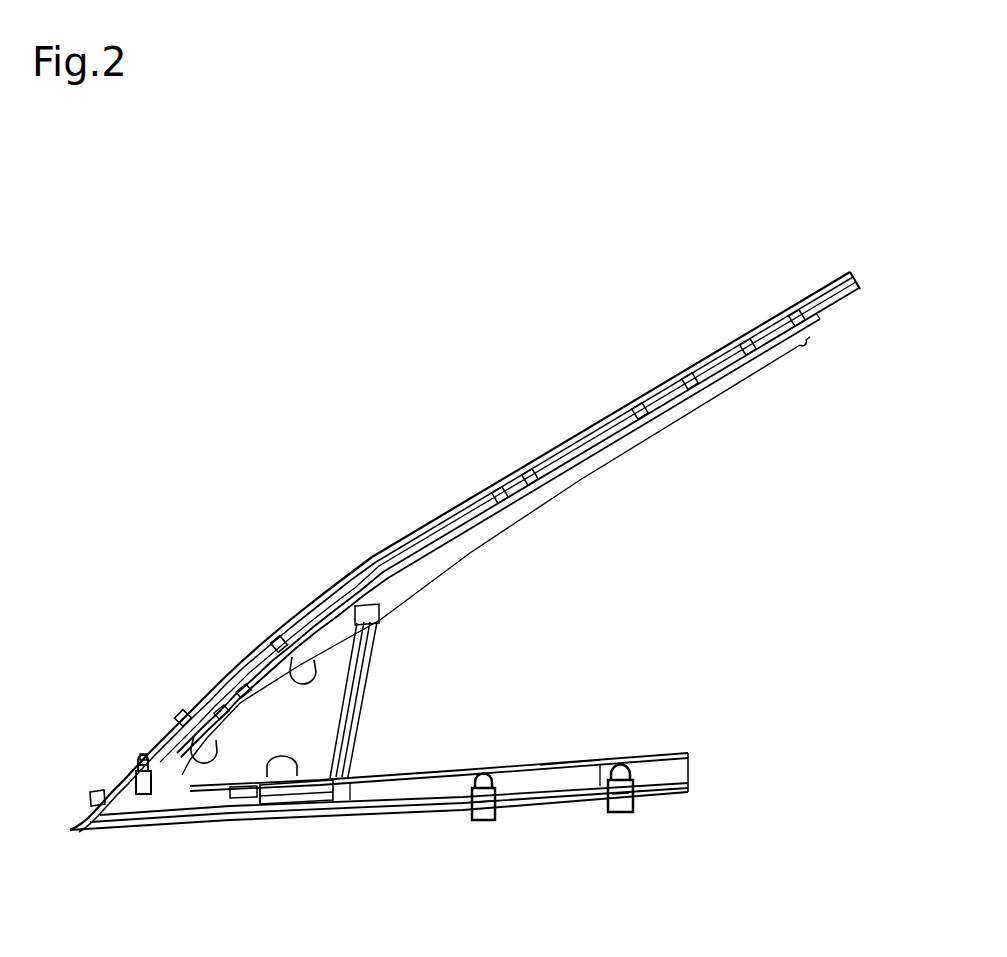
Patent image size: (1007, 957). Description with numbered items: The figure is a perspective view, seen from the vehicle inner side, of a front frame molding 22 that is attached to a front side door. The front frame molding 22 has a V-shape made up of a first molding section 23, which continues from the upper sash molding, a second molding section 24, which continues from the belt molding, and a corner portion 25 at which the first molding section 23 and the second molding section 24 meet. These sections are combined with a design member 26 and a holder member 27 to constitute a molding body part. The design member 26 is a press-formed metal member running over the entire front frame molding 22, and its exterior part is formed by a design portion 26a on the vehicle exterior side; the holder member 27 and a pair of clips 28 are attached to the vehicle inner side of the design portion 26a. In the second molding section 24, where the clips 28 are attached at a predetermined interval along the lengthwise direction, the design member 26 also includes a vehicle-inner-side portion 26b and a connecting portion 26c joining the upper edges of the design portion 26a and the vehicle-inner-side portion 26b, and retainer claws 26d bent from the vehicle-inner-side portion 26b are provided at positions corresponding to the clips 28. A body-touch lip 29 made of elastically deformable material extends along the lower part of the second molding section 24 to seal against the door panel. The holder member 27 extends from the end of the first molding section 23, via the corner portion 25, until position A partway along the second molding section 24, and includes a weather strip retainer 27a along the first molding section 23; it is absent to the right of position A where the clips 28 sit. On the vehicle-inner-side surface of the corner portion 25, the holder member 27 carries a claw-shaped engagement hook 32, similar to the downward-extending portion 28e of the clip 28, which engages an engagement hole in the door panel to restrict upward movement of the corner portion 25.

The front frame molding 22 is at (298, 312).
The first molding section 23 is at (474, 462).
The second molding section 24 is at (566, 832).
The corner portion 25 is at (124, 712).
The design member 26 is at (405, 774).
The design portion 26a is at (318, 808).
The vehicle-inner-side portion 26b is at (540, 780).
The connecting portion 26c is at (568, 758).
The retainer claws 26d is at (482, 780).
The holder member 27 is at (122, 800).
The weather strip retainer 27a is at (822, 288).
The clips 28 is at (486, 820).
The downward-extending portion 28e is at (470, 806).
The body-touch lip 29 is at (368, 815).
The engagement hook 32 is at (136, 780).
The position A is at (288, 798).